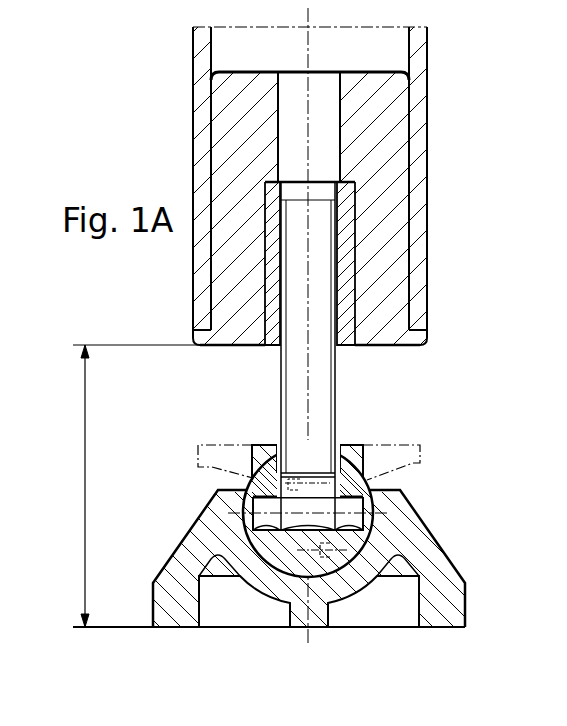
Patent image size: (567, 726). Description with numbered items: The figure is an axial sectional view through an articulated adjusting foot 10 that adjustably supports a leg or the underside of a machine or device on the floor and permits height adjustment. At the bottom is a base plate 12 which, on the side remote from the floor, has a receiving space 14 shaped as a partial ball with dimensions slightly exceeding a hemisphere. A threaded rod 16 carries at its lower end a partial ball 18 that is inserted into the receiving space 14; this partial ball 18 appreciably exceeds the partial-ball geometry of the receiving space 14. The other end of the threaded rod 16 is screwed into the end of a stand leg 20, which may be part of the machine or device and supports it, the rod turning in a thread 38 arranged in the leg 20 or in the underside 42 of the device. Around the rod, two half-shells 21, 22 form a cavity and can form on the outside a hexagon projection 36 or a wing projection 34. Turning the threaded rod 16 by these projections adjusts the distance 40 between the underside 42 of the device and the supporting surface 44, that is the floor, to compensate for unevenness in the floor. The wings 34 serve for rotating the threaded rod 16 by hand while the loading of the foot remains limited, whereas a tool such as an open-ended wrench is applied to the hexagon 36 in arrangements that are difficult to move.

The articulated adjusting foot 10 is at (469, 422).
The base plate 12 is at (467, 621).
The receiving space 14 is at (360, 590).
The threaded rod 16 is at (338, 377).
The partial ball 18 is at (368, 488).
The stand leg 20 is at (427, 168).
The half-shell 21 is at (346, 457).
The half-shell 22 is at (268, 457).
The wing projection 34 is at (214, 450).
The hexagon projection 36 is at (252, 461).
The thread 38 is at (287, 192).
The distance 40 is at (85, 482).
The underside of the device 42 is at (232, 351).
The supporting surface 44 is at (178, 628).